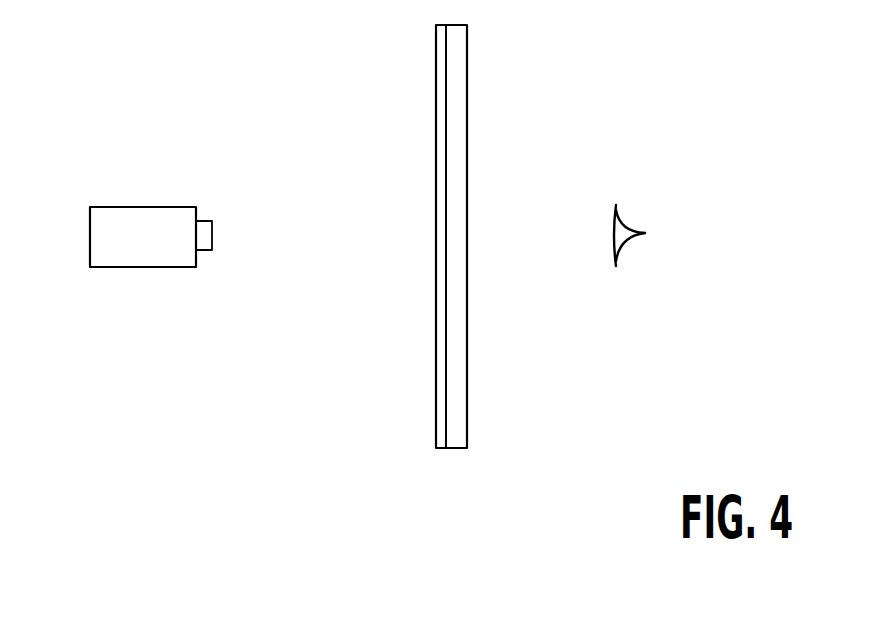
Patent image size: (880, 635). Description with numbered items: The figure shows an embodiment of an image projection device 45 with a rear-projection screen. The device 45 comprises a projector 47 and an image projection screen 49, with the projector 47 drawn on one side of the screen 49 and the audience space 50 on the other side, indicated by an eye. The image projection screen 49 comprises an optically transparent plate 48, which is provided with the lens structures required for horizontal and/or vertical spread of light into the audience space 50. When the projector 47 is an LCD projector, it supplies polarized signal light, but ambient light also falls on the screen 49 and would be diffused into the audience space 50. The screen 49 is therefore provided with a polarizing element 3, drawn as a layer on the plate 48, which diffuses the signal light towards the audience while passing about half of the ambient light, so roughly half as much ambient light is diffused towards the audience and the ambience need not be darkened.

The polarizing element 3 is at (440, 54).
The optically transparent plate 48 is at (458, 52).
The projector 47 is at (132, 222).
The image projection device 45 is at (89, 363).
The image projection screen 49 is at (368, 469).
The audience space 50 is at (643, 303).